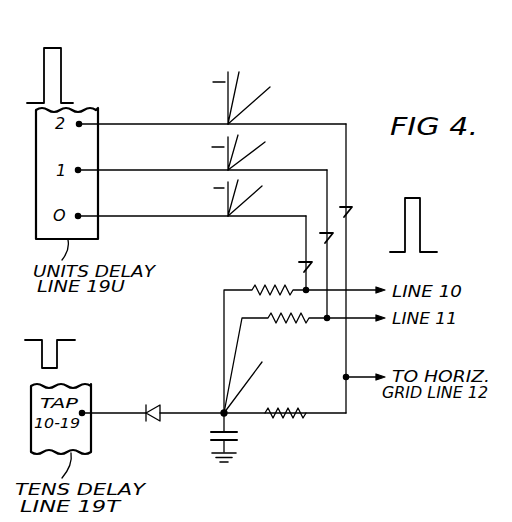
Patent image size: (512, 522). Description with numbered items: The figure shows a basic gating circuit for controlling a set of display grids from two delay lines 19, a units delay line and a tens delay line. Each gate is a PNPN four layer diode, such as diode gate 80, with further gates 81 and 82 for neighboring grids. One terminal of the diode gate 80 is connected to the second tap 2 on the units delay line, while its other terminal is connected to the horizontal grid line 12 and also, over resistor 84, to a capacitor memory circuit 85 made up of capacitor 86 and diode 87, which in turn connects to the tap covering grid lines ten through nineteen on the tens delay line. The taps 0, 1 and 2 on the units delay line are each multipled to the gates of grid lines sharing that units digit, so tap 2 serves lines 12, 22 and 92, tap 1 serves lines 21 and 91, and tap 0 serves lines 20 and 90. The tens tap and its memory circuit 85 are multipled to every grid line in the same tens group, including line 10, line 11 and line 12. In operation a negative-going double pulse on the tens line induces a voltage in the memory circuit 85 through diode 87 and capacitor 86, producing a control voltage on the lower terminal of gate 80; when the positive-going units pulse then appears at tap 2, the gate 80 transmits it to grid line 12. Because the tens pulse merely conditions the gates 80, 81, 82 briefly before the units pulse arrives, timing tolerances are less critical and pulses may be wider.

The horizontal grid line 12 is at (164, 121).
The grid line with units digit two 22 is at (241, 79).
The grid line with units digit two 92 is at (268, 92).
The tap 2 is at (210, 83).
The grid line with units digit one 21 is at (237, 142).
The grid line with units digit one 91 is at (262, 146).
The tap 1 is at (213, 148).
The grid line with units digit zero 20 is at (235, 186).
The grid line with units digit zero 90 is at (256, 194).
The tap 0 is at (213, 188).
The four layer diode gate 80 is at (350, 213).
The four layer diode gate 81 is at (333, 240).
The four layer diode gate 82 is at (312, 268).
The grid line 10 is at (224, 371).
The grid line 11 is at (242, 333).
The delay line 19 is at (258, 367).
The resistor 84 is at (303, 417).
The diode 87 is at (157, 405).
The capacitor 86 is at (208, 436).
The capacitor memory circuit 85 is at (268, 456).